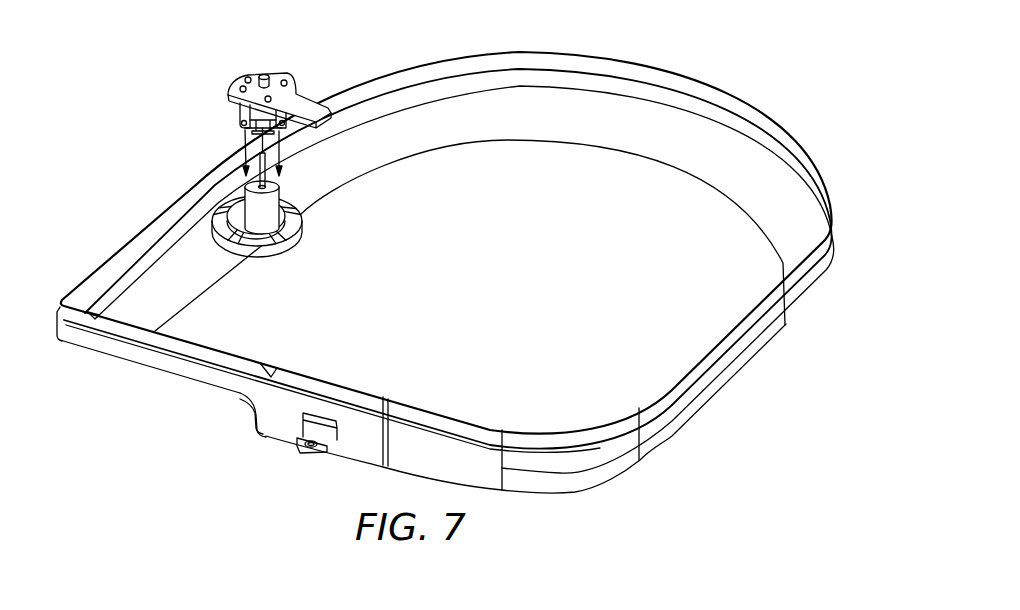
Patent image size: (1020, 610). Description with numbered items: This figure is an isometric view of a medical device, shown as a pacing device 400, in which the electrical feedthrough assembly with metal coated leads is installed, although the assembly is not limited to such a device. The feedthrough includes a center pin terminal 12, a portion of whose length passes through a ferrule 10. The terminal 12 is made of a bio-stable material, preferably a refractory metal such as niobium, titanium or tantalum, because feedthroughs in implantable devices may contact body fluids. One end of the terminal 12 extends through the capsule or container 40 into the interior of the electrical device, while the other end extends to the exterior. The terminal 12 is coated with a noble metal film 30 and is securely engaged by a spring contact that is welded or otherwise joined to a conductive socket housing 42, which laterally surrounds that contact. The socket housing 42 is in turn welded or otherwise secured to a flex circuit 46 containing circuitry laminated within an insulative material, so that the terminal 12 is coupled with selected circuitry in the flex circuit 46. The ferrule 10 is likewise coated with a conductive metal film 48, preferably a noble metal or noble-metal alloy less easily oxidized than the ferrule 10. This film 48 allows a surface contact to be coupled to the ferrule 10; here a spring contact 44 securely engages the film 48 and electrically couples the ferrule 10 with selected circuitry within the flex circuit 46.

The pacing device 400 is at (197, 410).
The capsule or container 40 is at (302, 214).
The ferrule 10 is at (343, 200).
The conductive metal film 48 is at (273, 211).
The center pin terminal 12 is at (193, 157).
The noble metal film 30 is at (258, 180).
The spring contact 44 is at (240, 106).
The flex circuit 46 is at (274, 82).
The conductive socket housing 42 is at (262, 75).